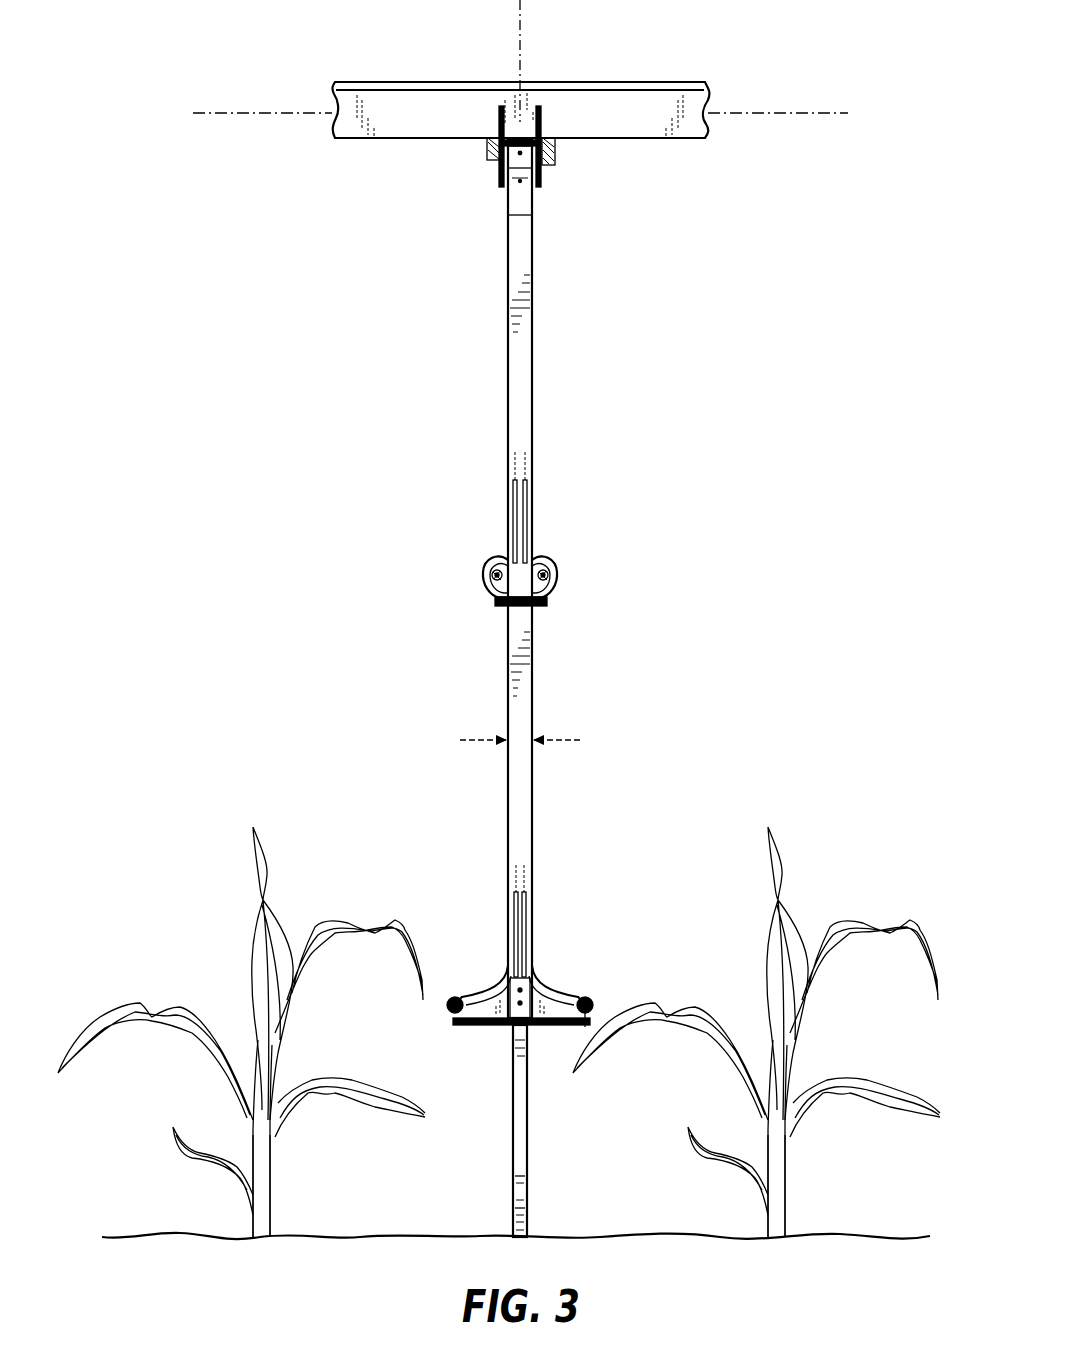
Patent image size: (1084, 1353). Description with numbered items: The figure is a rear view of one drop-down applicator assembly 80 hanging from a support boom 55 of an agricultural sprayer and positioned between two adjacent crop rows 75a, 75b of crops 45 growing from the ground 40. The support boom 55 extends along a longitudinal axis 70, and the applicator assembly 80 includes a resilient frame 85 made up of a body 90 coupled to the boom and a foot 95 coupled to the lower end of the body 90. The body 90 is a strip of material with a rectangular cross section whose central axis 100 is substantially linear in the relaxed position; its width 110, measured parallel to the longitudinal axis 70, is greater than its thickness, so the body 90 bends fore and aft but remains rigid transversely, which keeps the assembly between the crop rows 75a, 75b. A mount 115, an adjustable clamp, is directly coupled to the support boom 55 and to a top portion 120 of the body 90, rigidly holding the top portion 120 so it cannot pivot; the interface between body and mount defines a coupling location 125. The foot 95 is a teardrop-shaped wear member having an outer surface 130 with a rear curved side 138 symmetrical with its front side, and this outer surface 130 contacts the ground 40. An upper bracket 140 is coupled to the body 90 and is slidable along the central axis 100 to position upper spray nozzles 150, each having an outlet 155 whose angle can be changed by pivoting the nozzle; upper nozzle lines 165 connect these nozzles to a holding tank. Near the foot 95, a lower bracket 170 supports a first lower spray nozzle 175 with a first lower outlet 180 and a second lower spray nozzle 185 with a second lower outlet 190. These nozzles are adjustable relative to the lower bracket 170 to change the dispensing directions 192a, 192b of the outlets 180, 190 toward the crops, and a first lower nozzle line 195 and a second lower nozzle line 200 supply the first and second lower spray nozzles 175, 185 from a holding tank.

The ground 40 is at (862, 1235).
The crops 45 is at (254, 1215).
The support boom 55 is at (621, 88).
The longitudinal axis 70 is at (282, 112).
The crop row 75a is at (864, 890).
The crop row 75b is at (206, 890).
The applicator assembly 80 is at (791, 332).
The frame 85 is at (713, 692).
The body 90 is at (535, 355).
The foot 95 is at (528, 1124).
The central axis 100 is at (520, 50).
The width 110 is at (484, 744).
The mount 115 is at (553, 148).
The top portion 120 is at (521, 181).
The coupling location 125 is at (472, 181).
The outer surface 130 is at (520, 1173).
The rear curved side 138 is at (534, 1220).
The upper bracket 140 is at (548, 557).
The upper spray nozzles 150 is at (492, 601).
The outlet 155 is at (487, 570).
The upper nozzle lines 165 is at (513, 513).
The lower bracket 170 is at (543, 978).
The first lower spray nozzle 175 is at (455, 998).
The first lower outlet 180 is at (455, 1028).
The second lower spray nozzle 185 is at (591, 1000).
The second lower outlet 190 is at (588, 1028).
The dispensing direction 192a is at (435, 1028).
The dispensing direction 192b is at (612, 1032).
The first lower nozzle line 195 is at (506, 900).
The second lower nozzle line 200 is at (531, 900).